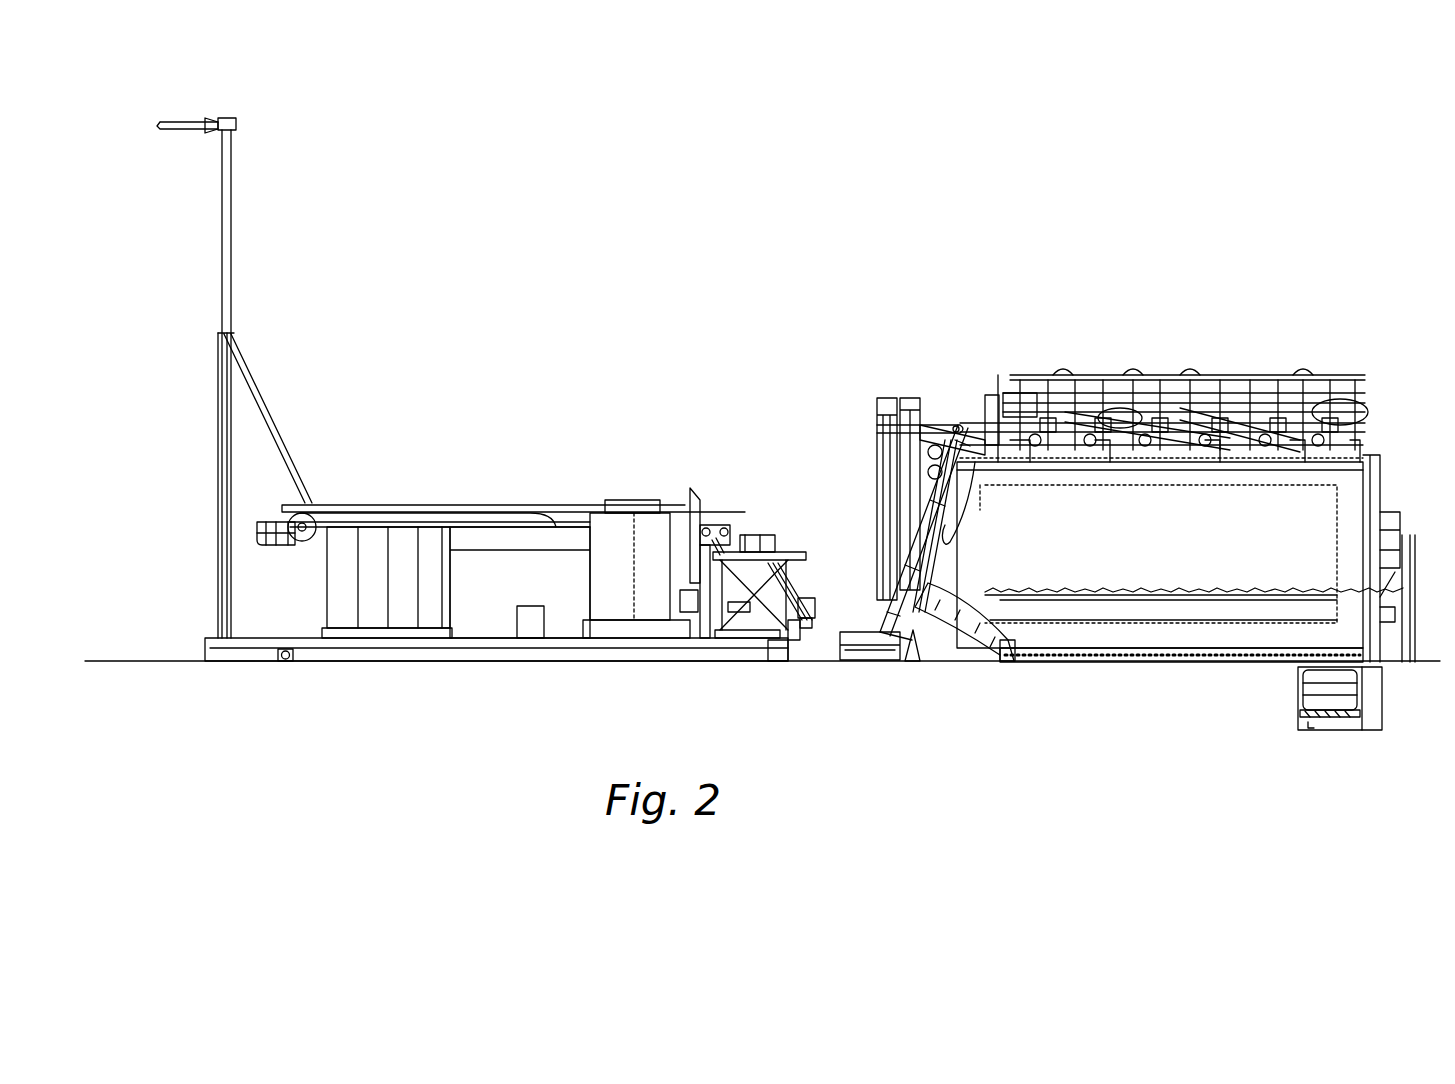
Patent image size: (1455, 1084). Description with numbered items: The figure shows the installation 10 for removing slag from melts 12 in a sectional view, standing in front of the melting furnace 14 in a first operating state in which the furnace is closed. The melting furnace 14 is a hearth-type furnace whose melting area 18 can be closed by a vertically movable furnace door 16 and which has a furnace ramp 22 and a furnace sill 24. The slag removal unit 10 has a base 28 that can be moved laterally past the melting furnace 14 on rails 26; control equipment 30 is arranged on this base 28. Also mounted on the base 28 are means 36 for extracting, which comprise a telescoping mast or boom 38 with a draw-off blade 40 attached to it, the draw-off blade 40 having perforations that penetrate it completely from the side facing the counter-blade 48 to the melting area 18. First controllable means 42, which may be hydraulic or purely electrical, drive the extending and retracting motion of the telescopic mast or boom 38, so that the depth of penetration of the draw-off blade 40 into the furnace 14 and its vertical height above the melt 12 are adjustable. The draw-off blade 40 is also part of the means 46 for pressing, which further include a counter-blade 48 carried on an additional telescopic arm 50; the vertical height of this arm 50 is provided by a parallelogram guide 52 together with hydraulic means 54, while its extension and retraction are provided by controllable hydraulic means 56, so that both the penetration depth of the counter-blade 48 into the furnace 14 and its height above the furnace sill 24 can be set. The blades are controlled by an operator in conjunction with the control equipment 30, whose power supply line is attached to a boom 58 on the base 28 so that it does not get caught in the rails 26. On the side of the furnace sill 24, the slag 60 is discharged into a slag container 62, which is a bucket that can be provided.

The installation 10 is at (468, 258).
The melt 12 is at (1282, 615).
The melting furnace 14 is at (1100, 245).
The furnace door 16 is at (978, 462).
The melting area 18 is at (1248, 526).
The furnace ramp 22 is at (1100, 598).
The furnace sill 24 is at (950, 583).
The rails 26 is at (286, 665).
The base 28 is at (377, 650).
The control equipment 30 is at (402, 558).
The means for extracting 36 is at (742, 518).
The telescoping mast or boom 38 is at (700, 540).
The draw-off blade 40 is at (767, 543).
The first controllable means 42 is at (266, 520).
The means for pressing 46 is at (794, 636).
The counter-blade 48 is at (805, 612).
The telescopic arm 50 is at (733, 612).
The parallelogram guide 52 is at (700, 580).
The hydraulic means 54 is at (775, 626).
The controllable hydraulic means 56 is at (695, 605).
The boom 58 is at (228, 163).
The slag 60 is at (1187, 592).
The slag container 62 is at (866, 632).